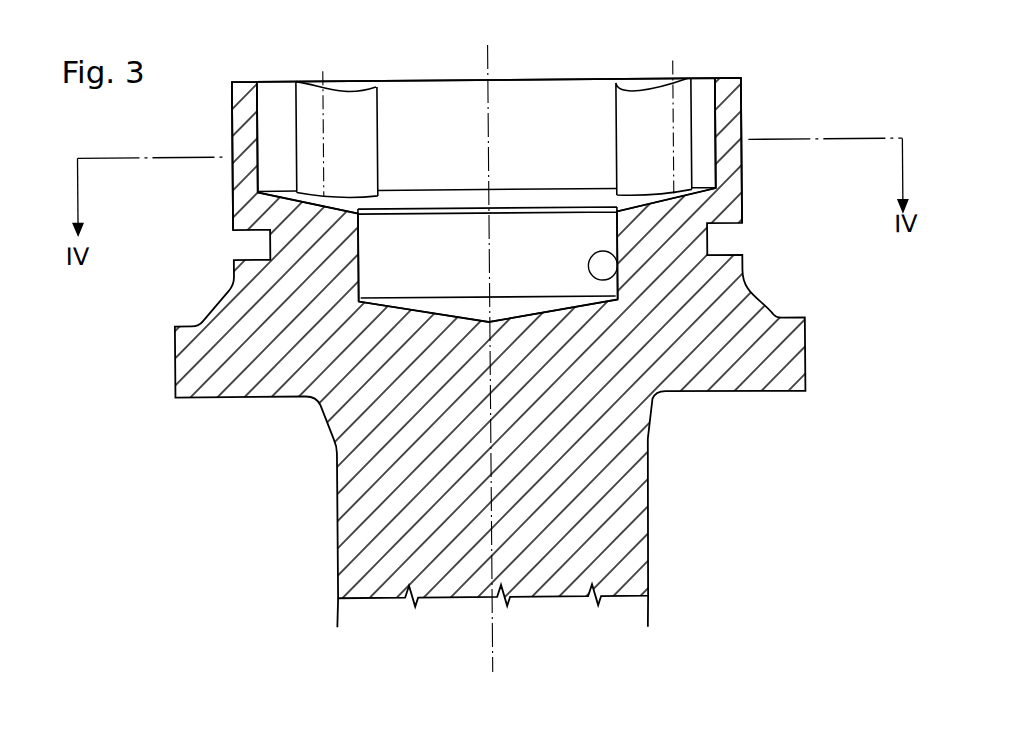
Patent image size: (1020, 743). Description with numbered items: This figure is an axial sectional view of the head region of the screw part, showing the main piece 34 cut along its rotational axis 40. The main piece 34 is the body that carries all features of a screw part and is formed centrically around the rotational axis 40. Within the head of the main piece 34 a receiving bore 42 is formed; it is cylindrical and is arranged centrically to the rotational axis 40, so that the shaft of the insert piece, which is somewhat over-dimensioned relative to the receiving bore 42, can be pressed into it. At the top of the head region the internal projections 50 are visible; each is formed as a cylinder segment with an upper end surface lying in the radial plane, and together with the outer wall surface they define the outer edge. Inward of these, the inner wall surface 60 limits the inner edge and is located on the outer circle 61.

The main piece 34 is at (288, 301).
The rotational axis 40 is at (491, 646).
The receiving bore 42 is at (617, 282).
The internal projections 50 is at (310, 134).
The inner wall surface 60 is at (707, 114).
The outer circle 61 is at (260, 116).